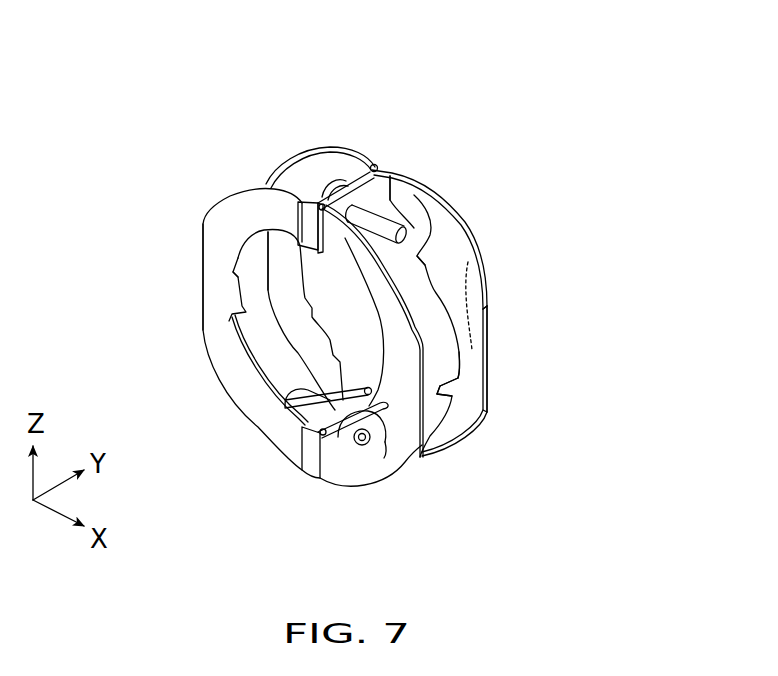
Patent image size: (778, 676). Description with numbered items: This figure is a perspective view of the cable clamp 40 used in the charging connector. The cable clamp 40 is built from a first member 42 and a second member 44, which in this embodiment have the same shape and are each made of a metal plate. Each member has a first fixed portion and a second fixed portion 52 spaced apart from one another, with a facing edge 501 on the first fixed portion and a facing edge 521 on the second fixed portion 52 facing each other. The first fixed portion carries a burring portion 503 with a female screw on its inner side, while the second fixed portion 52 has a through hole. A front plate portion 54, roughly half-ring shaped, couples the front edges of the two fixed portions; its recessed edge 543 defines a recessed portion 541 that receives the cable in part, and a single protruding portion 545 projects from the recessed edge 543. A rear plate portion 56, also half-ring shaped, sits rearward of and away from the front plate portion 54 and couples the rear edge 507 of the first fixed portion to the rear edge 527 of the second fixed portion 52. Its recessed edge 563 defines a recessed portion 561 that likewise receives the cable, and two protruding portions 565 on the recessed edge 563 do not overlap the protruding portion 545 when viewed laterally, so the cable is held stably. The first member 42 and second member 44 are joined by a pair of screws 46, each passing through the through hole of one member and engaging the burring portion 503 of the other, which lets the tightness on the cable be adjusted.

The cable clamp 40 is at (348, 47).
The first member 42 is at (497, 279).
The second member 44 is at (200, 243).
The screws 46 is at (420, 192).
The facing edge 501 is at (300, 442).
The burring portion 503 is at (365, 167).
The rear edge 507 is at (347, 330).
The second fixed portion 52 is at (330, 165).
The facing edge 521 is at (300, 472).
The rear edge 527 is at (392, 425).
The front plate portion 54 is at (220, 293).
The recessed portion 541 is at (282, 282).
The recessed edge 543 is at (440, 410).
The protruding portion 545 is at (232, 314).
The rear plate portion 56 is at (480, 357).
The recessed portion 561 is at (348, 275).
The recessed edge 563 is at (440, 382).
The protruding portions 565 is at (436, 325).